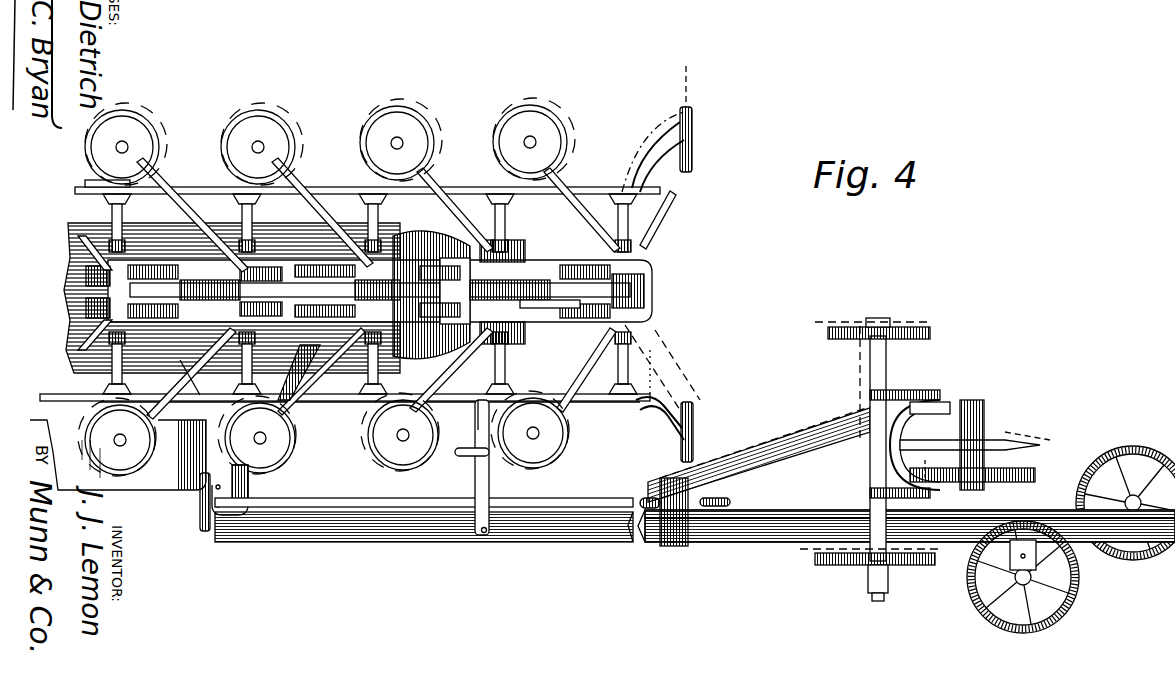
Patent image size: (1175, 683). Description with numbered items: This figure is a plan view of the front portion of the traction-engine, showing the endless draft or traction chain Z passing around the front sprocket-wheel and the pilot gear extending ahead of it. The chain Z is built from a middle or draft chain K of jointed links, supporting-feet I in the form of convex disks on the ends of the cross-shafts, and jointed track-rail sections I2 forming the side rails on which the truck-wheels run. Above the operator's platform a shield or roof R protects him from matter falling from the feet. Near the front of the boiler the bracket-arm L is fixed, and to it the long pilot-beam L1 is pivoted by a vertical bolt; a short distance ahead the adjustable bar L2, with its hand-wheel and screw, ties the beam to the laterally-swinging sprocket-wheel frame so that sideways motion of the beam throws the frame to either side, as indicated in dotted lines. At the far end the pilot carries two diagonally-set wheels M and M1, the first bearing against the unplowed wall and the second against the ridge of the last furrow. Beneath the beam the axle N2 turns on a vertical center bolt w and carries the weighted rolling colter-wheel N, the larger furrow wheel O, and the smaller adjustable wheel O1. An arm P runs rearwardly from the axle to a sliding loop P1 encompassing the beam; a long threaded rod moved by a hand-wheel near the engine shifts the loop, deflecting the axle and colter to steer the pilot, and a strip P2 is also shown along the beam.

The track-rail section I2 is at (238, 176).
The middle or draft chain K is at (646, 292).
The draft or traction chain Z is at (665, 344).
The shield or roof R is at (164, 476).
The bracket-arm L is at (266, 485).
The supporting-feet I is at (410, 447).
The adjustable bar L2 is at (516, 484).
The pole strip P2 is at (598, 486).
The pilot-beam L1 is at (459, 557).
The sliding loop P1 is at (679, 558).
The arm P is at (755, 430).
The carrying-wheel O1 is at (939, 340).
The axle N2 is at (870, 492).
The rolling colter-wheel N is at (1050, 475).
The diagonally-set pilot wheel M1 is at (1119, 437).
The vertical center bolt w is at (867, 527).
The carrying-wheel O is at (821, 575).
The diagonally-set pilot wheel M is at (1067, 617).